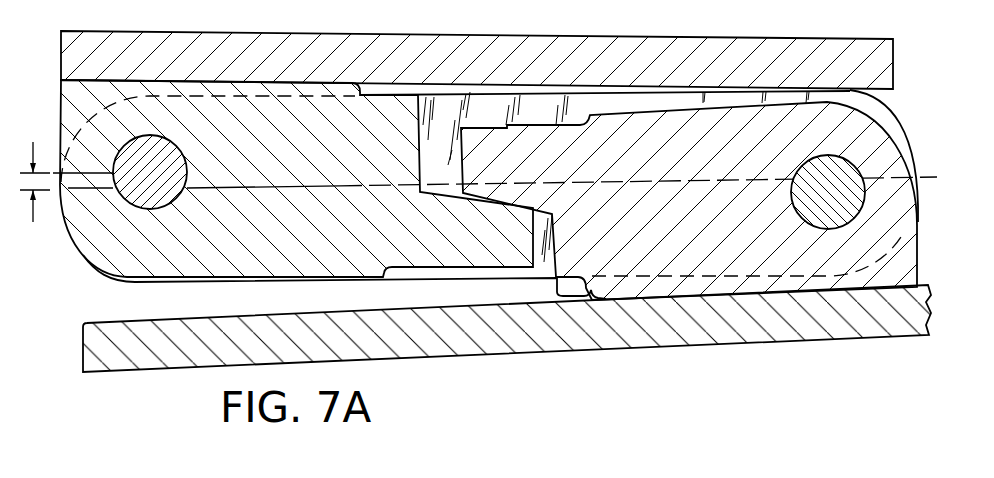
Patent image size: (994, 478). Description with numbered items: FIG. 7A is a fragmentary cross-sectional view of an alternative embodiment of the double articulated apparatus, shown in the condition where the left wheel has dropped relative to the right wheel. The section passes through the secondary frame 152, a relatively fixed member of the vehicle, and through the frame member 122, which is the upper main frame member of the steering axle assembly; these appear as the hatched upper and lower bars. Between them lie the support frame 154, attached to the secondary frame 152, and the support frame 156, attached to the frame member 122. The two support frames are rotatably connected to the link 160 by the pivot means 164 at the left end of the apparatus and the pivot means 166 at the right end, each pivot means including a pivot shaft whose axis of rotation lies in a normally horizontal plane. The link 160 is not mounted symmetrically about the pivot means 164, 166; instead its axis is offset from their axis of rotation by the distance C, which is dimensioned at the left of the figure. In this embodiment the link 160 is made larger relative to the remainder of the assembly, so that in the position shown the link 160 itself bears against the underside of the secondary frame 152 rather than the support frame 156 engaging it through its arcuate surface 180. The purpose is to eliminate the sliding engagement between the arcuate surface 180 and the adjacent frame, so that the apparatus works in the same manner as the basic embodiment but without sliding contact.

The secondary frame 152 is at (622, 38).
The frame member 122 is at (523, 354).
The support frame 154 is at (60, 114).
The support frame 156 is at (922, 285).
The link 160 is at (257, 284).
The arcuate surface 180 is at (899, 137).
The pivot means 164 is at (130, 216).
The pivot means 166 is at (860, 225).
The distance C is at (35, 170).